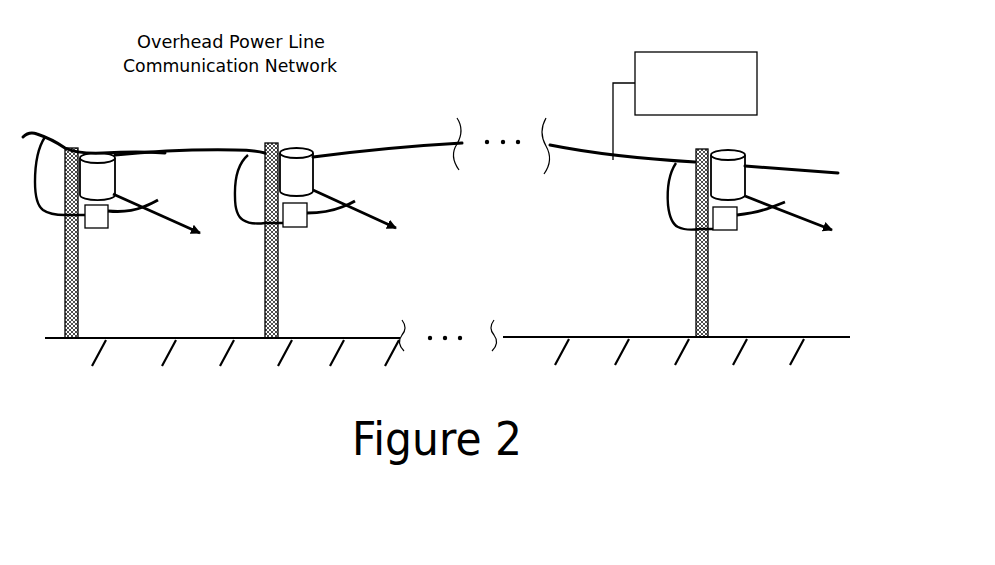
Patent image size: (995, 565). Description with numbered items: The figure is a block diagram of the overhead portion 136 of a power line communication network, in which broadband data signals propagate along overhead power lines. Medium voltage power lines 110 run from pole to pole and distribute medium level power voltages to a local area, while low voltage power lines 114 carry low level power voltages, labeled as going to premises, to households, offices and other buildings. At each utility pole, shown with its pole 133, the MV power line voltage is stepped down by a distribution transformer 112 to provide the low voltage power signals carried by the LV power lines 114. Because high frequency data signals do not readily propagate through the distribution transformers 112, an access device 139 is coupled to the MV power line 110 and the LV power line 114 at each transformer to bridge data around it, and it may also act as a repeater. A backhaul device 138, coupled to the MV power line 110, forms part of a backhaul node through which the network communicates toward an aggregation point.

The medium voltage power line 110 is at (153, 147).
The distribution transformer 112 is at (97, 157).
The low voltage power line 114 is at (187, 218).
The utility pole 133 is at (710, 310).
The overhead portion 136 is at (413, 77).
The backhaul device 138 is at (667, 52).
The access device 139 is at (97, 230).